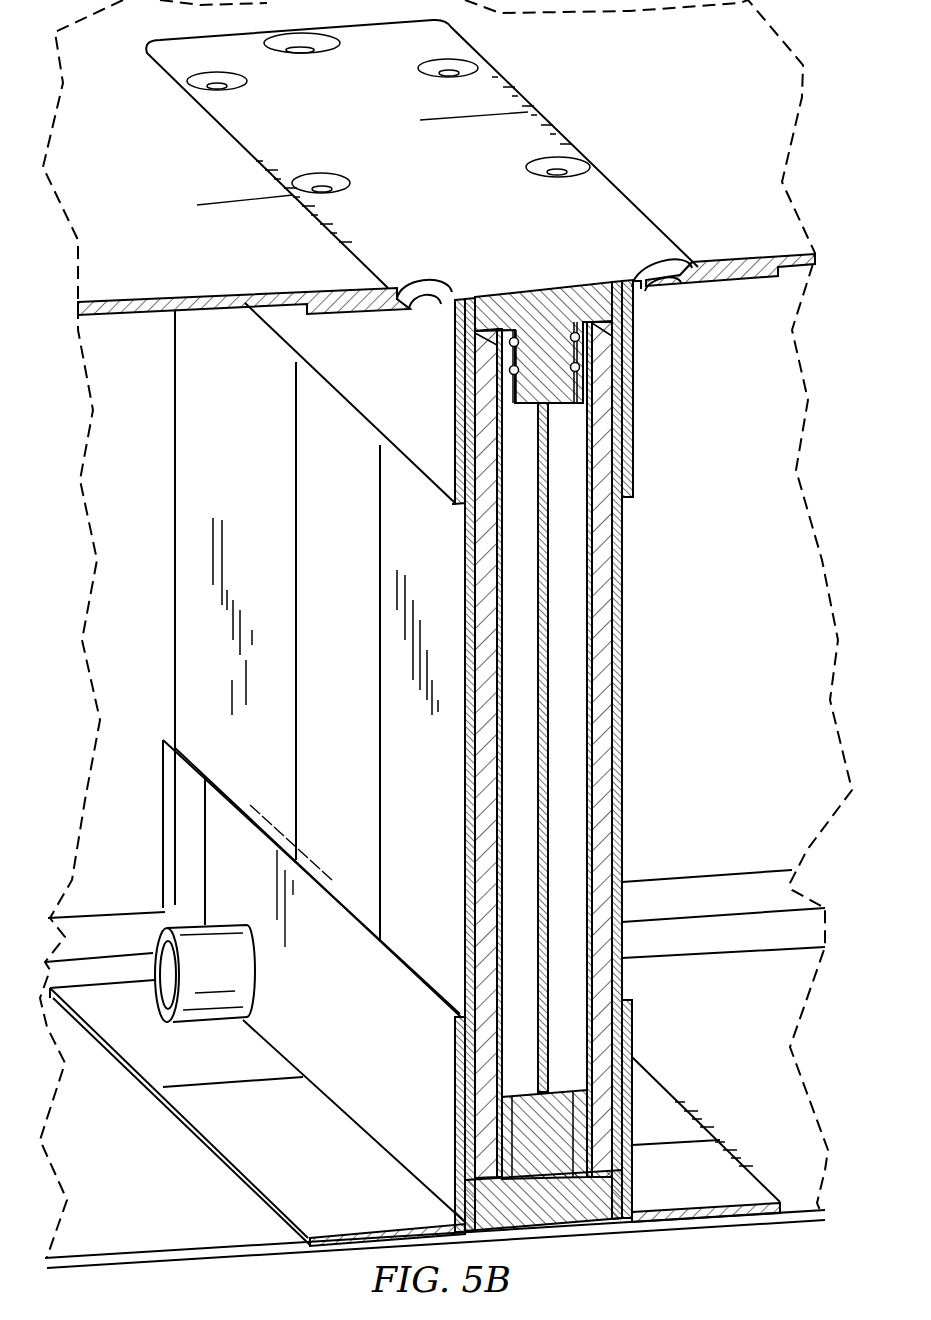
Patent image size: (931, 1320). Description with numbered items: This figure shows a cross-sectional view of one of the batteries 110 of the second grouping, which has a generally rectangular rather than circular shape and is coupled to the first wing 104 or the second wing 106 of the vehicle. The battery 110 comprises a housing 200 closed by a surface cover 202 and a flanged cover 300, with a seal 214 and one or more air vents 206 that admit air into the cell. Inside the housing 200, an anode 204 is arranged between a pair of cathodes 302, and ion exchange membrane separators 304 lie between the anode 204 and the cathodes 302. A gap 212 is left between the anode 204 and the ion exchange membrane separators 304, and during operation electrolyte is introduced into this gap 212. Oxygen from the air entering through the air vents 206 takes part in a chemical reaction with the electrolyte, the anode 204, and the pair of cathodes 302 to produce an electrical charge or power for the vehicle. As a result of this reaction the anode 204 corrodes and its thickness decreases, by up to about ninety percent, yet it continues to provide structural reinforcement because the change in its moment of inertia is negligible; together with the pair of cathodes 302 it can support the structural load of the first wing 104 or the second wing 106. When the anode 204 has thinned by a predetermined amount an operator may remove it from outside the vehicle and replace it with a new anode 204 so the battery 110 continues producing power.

The first wing 104 is at (162, 187).
The second wing 106 is at (723, 272).
The surface cover 202 is at (434, 187).
The housing 200 is at (217, 430).
The flanged cover 300 is at (342, 343).
The air vents 206 is at (380, 498).
The seal 214 is at (603, 380).
The battery 110 is at (650, 564).
The anode 204 is at (548, 668).
The pair of cathodes 302 is at (600, 746).
The ion exchange membrane separator 304 is at (588, 802).
The gap 212 is at (508, 849).